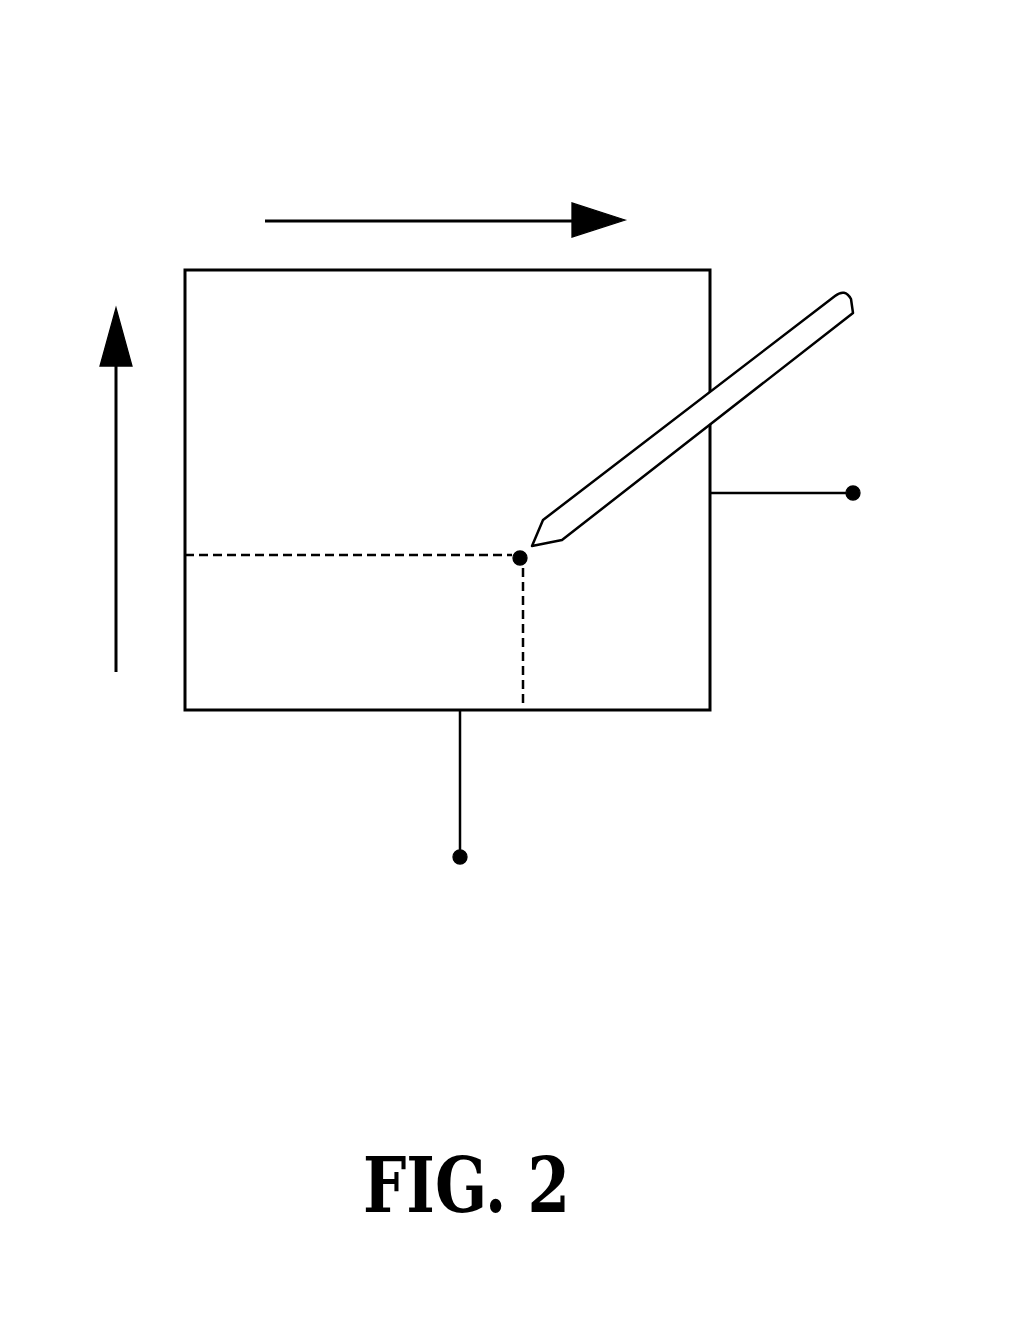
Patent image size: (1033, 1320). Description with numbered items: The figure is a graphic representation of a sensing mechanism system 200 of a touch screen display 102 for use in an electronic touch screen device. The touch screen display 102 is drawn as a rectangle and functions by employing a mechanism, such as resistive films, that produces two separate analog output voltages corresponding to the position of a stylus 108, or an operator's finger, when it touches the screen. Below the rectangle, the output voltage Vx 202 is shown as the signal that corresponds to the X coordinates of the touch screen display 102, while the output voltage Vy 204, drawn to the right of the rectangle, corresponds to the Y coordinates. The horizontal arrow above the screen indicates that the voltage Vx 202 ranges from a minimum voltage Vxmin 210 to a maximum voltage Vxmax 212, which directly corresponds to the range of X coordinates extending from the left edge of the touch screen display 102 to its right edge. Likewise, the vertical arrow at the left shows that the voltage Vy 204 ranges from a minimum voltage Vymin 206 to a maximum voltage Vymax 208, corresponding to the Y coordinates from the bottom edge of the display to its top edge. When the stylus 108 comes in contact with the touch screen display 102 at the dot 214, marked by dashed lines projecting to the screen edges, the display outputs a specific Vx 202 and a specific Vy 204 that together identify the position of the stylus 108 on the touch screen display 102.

The sensing mechanism system 200 is at (90, 31).
The touch screen display 102 is at (470, 521).
The stylus 108 is at (652, 433).
The output voltage Vx 202 is at (462, 913).
The output voltage Vy 204 is at (877, 472).
The minimum voltage Vymin 206 is at (118, 722).
The maximum voltage Vymax 208 is at (134, 268).
The minimum voltage Vxmin 210 is at (220, 200).
The maximum voltage Vxmax 212 is at (677, 200).
The dot 214 is at (527, 566).